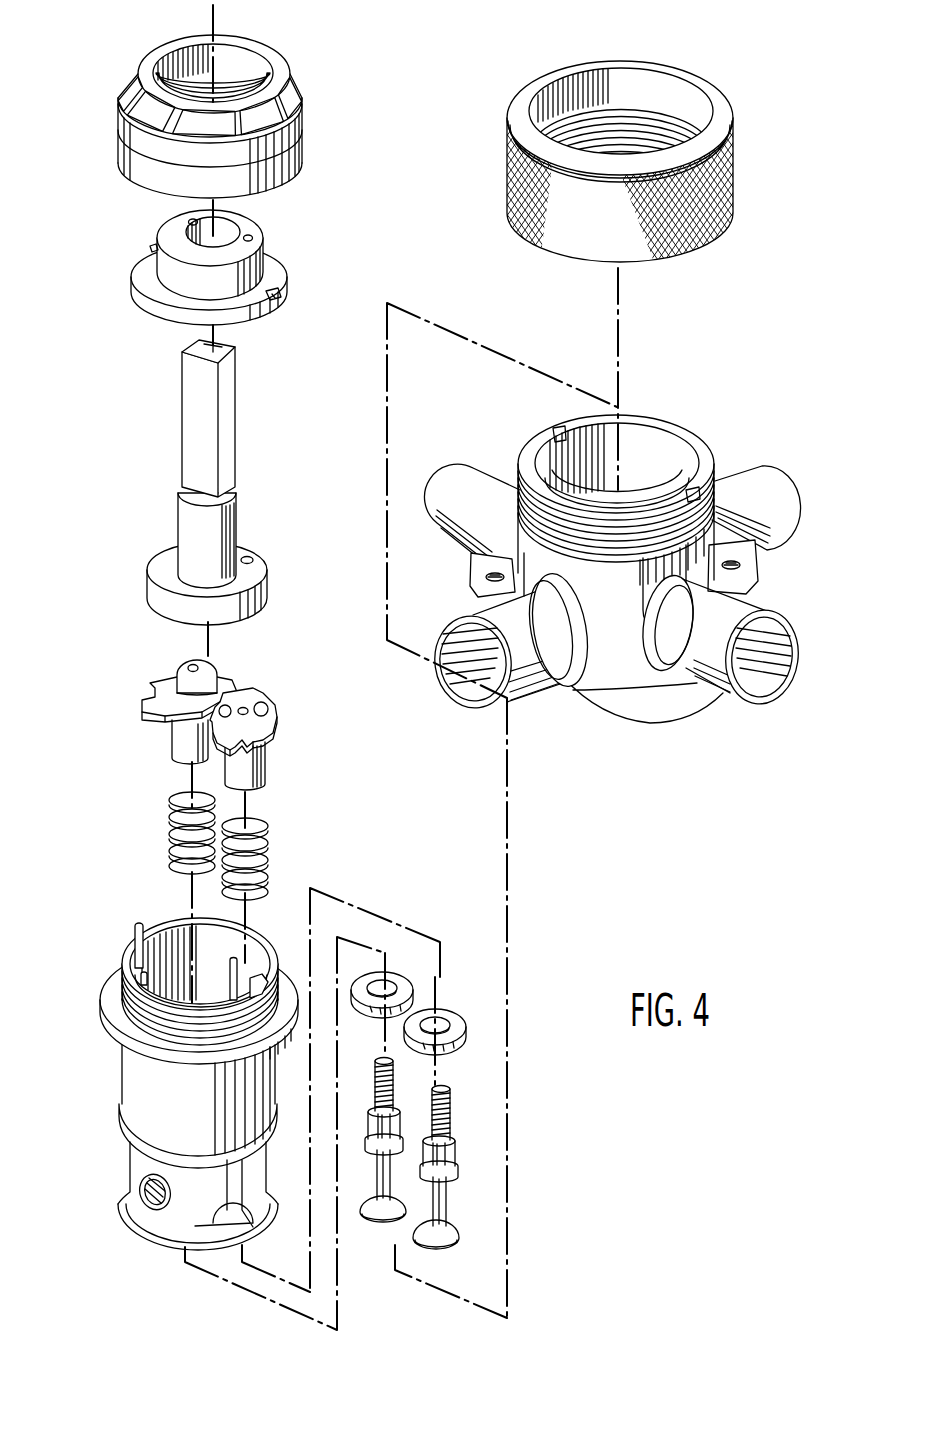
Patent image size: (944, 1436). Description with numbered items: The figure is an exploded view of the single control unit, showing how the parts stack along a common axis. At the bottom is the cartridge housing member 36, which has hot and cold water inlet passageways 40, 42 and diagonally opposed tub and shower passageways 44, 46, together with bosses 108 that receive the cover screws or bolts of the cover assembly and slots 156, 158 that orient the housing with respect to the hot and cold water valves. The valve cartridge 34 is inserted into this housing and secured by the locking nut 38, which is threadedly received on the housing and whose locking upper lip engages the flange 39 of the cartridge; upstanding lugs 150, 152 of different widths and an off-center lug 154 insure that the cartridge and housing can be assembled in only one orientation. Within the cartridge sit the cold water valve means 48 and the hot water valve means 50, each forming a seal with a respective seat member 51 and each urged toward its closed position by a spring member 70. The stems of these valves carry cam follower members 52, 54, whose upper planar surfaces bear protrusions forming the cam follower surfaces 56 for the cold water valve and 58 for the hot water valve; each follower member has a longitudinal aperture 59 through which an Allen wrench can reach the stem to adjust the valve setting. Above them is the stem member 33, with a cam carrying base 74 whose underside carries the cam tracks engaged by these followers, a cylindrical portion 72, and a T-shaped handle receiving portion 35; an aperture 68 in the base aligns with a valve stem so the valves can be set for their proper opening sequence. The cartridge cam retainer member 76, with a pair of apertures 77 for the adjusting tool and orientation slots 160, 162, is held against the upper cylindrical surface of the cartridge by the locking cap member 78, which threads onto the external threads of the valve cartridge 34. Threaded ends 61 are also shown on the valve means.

The stem member 33 is at (220, 482).
The valve cartridge 34 is at (185, 1071).
The T-shaped handle receiving portion 35 is at (188, 431).
The cartridge housing member 36 is at (625, 572).
The locking nut 38 is at (735, 174).
The flange 39 is at (113, 990).
The hot water inlet passageway 40 is at (782, 672).
The cold water inlet passageway 42 is at (478, 480).
The tub passageway 44 is at (520, 692).
The shower passageway 46 is at (775, 502).
The cold water valve means 48 is at (446, 1243).
The hot water valve means 50 is at (378, 1218).
The seat member 51 is at (396, 977).
The cam follower member 52 is at (263, 732).
The cam follower member 54 is at (183, 702).
The cam follower surfaces 56 is at (263, 712).
The cam follower surface 58 is at (180, 678).
The aperture 59 is at (193, 665).
The threaded end 61 is at (382, 1058).
The aperture 68 is at (251, 558).
The spring members 70 is at (172, 805).
The cylindrical portion 72 is at (222, 521).
The cam carrying base 74 is at (257, 581).
The cartridge cam retainer member 76 is at (219, 260).
The apertures 77 is at (190, 221).
The locking cap member 78 is at (301, 122).
The bosses 108 is at (474, 578).
The upstanding lug 150 is at (264, 983).
The upstanding lug 152 is at (137, 926).
The lug 154 is at (274, 1068).
The slot 156 is at (556, 428).
The slot 158 is at (686, 490).
The slot 160 is at (152, 248).
The slot 162 is at (278, 297).